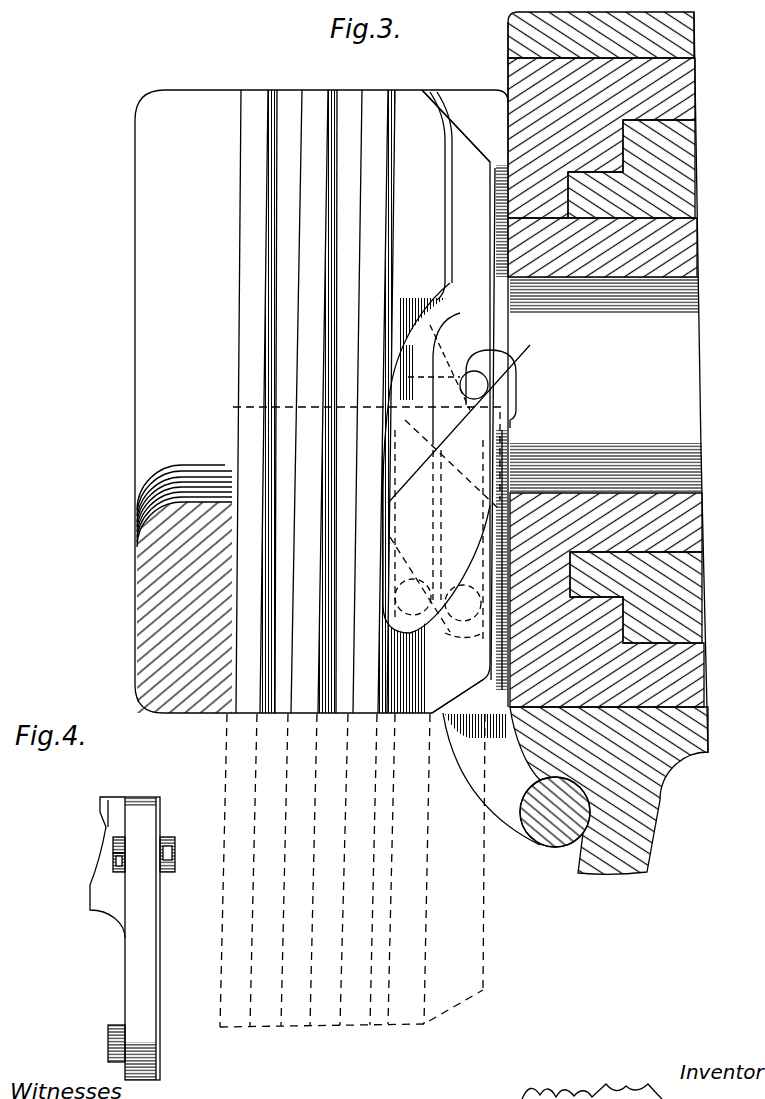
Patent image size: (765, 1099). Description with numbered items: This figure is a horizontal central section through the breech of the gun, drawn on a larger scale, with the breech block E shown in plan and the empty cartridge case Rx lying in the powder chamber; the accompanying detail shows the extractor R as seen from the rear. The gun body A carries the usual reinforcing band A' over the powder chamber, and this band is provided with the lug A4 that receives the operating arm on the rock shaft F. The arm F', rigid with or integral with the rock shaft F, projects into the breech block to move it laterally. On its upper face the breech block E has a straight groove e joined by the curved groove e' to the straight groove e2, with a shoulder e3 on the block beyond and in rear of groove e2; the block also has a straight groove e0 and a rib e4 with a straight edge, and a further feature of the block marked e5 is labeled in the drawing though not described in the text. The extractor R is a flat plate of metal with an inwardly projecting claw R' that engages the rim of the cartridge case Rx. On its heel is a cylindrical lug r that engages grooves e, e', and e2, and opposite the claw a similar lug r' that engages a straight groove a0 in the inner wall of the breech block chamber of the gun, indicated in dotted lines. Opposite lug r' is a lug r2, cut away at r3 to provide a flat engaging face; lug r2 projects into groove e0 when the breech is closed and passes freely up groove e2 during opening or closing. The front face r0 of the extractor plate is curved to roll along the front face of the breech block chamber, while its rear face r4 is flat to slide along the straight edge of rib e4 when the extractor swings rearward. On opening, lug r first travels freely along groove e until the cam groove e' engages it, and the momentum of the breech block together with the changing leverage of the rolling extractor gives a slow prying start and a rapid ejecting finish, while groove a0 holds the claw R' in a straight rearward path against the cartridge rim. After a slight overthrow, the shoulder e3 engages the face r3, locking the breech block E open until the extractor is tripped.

In FIG. 3, the breech block E is at (312, 130).
In FIG. 3, the shoulder e3 is at (415, 90).
In FIG. 3, the reinforcing band A' is at (579, 35).
In FIG. 3, the gun body A is at (617, 382).
In FIG. 3, the rib e4 is at (393, 222).
In FIG. 3, the straight groove e2 is at (482, 427).
In FIG. 3, the curved groove e' is at (425, 246).
In FIG. 3, the straight groove a0 is at (463, 316).
In FIG. 3, the straight groove e0 is at (475, 337).
In FIG. 3, the cylindrical lug r' is at (470, 419).
In FIG. 4, the cylindrical lug r' is at (180, 854).
In FIG. 3, the claw R' is at (510, 389).
In FIG. 4, the claw R' is at (104, 824).
In FIG. 3, the cartridge case Rx is at (606, 385).
In FIG. 3, the curved front face r0 is at (520, 447).
In FIG. 4, the curved front face r0 is at (147, 993).
In FIG. 3, the lug r2 is at (438, 412).
In FIG. 4, the lug r2 is at (120, 848).
In FIG. 3, the flat engaging face r3 is at (410, 400).
In FIG. 4, the flat engaging face r3 is at (118, 857).
In FIG. 3, the wall portion e5 is at (395, 408).
In FIG. 3, the rear face r4 is at (418, 460).
In FIG. 3, the extractor R is at (441, 498).
In FIG. 4, the extractor R is at (108, 930).
In FIG. 3, the cylindrical lug r is at (419, 596).
In FIG. 4, the cylindrical lug r is at (95, 1036).
In FIG. 3, the straight groove e is at (440, 870).
In FIG. 3, the arm F' is at (482, 783).
In FIG. 3, the rock shaft F is at (405, 891).
In FIG. 3, the lug A4 is at (637, 851).